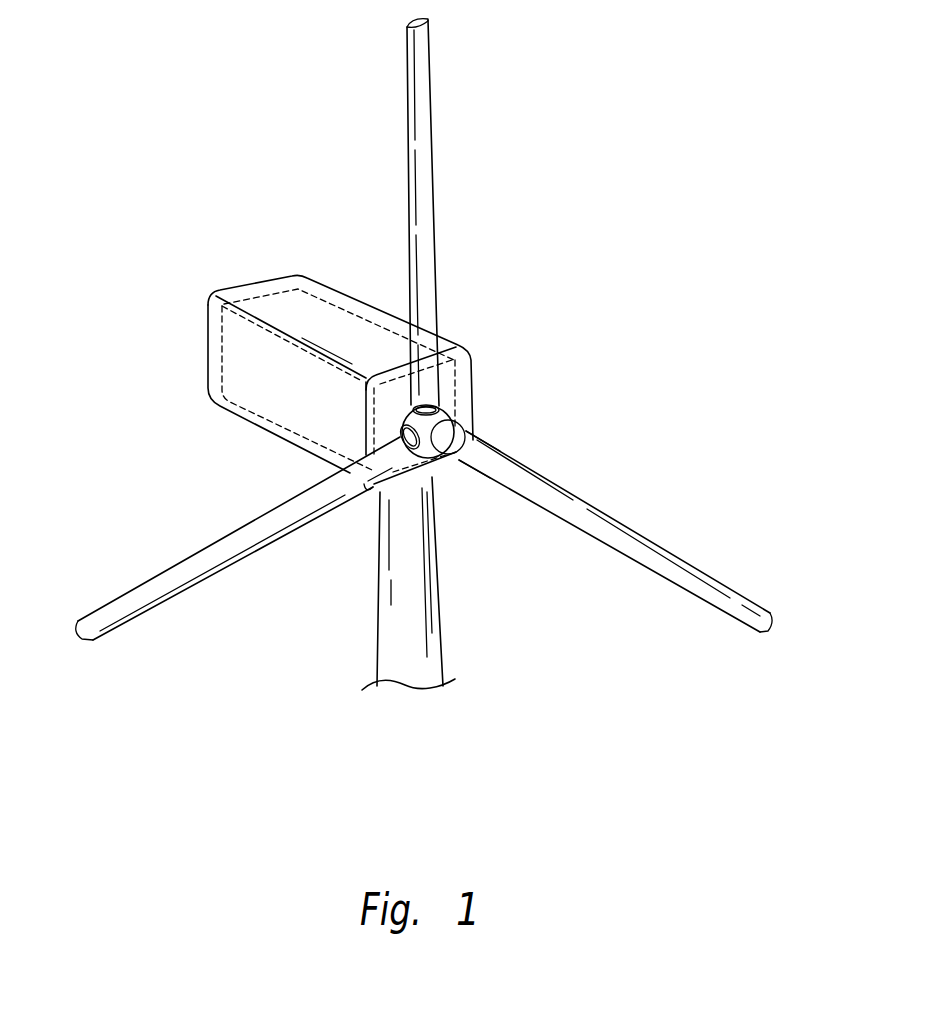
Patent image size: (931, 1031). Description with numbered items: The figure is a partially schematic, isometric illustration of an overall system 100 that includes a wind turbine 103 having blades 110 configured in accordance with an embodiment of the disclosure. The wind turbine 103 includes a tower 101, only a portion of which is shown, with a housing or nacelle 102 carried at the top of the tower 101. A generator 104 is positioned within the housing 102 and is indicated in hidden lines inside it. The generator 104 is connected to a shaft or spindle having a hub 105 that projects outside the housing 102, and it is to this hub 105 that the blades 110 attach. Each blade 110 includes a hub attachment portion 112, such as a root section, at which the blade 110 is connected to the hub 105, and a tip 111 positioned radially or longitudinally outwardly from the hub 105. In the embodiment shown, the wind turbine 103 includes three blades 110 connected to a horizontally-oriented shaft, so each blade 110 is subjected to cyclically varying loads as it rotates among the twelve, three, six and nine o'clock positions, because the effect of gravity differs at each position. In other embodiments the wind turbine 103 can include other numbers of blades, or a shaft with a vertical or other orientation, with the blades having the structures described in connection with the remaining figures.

The overall system 100 is at (413, 356).
The tower 101 is at (422, 604).
The housing or nacelle 102 is at (290, 379).
The wind turbine 103 is at (410, 356).
The generator 104 is at (205, 388).
The hub 105 is at (392, 412).
The blade 110 is at (430, 115).
The tip 111 is at (424, 31).
The hub attachment portion 112 is at (432, 396).